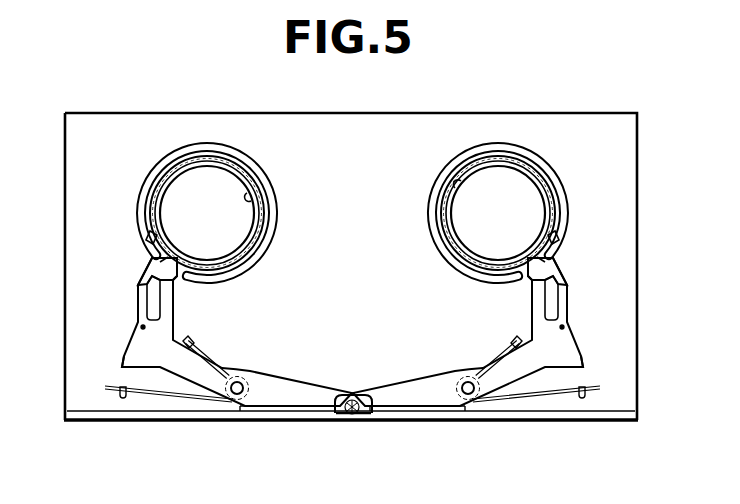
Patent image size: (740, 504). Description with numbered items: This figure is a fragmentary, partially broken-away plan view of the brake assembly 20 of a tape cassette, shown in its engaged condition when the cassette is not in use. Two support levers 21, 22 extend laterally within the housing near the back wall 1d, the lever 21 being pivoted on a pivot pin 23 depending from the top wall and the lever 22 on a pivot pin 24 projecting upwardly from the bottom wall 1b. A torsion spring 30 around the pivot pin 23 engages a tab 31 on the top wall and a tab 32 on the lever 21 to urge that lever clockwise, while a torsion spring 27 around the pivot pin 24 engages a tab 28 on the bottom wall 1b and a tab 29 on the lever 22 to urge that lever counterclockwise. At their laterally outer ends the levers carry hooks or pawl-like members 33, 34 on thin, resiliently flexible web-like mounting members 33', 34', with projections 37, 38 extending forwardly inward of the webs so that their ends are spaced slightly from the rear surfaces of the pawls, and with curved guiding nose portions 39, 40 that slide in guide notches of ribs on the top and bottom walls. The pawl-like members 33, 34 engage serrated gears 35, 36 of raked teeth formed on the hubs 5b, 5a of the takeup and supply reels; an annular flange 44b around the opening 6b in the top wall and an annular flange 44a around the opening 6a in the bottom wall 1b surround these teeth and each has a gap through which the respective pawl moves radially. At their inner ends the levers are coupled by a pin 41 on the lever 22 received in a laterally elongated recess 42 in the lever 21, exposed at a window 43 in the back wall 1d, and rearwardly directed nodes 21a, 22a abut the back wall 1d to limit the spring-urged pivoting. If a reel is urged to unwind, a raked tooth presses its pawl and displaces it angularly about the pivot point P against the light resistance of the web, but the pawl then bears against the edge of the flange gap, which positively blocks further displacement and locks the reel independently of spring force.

The brake assembly 20 is at (565, 128).
The bottom wall 1b is at (74, 262).
The back wall 1d is at (207, 415).
The annular flange 44b is at (257, 172).
The annular flange 44a is at (448, 172).
The hub 5b is at (157, 190).
The hub 5a is at (547, 187).
The opening 6b is at (252, 197).
The opening 6a is at (456, 186).
The serrated gear 35 is at (150, 238).
The serrated gear 36 is at (552, 247).
The pawl-like member 33 is at (140, 271).
The pawl-like member 34 is at (562, 271).
The mounting member 33' is at (131, 298).
The mounting member 34' is at (577, 298).
The projection 37 is at (175, 302).
The projection 38 is at (530, 302).
The guiding nose portion 39 is at (130, 360).
The guiding nose portion 40 is at (573, 360).
The tab 32 is at (193, 343).
The tab 29 is at (508, 343).
The pivot pin 23 is at (237, 400).
The pivot pin 24 is at (467, 400).
The torsion spring 30 is at (173, 401).
The torsion spring 27 is at (515, 398).
The tab 31 is at (122, 400).
The tab 28 is at (583, 400).
The lever 21 is at (297, 398).
The lever 22 is at (422, 398).
The node 21a is at (325, 412).
The node 22a is at (393, 415).
The pin 41 is at (340, 414).
The recess 42 is at (371, 414).
The window 43 is at (323, 420).
The pivot point P is at (141, 328).